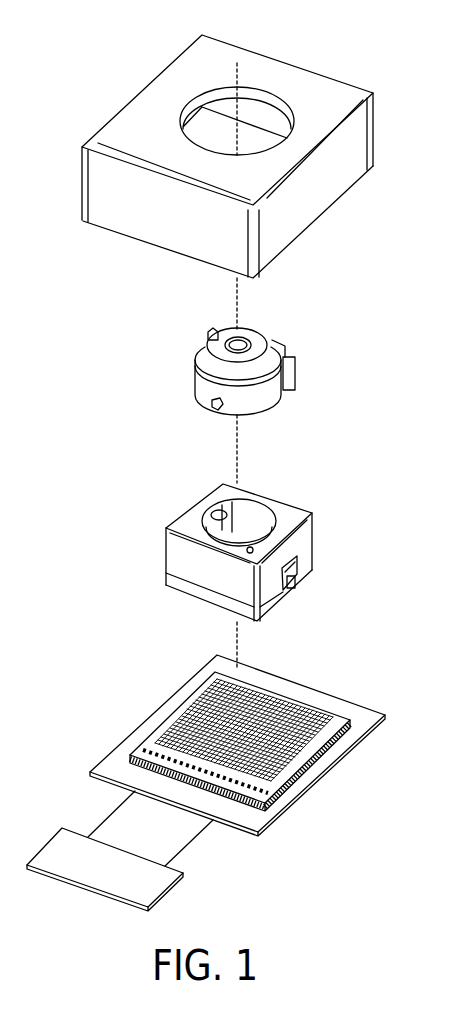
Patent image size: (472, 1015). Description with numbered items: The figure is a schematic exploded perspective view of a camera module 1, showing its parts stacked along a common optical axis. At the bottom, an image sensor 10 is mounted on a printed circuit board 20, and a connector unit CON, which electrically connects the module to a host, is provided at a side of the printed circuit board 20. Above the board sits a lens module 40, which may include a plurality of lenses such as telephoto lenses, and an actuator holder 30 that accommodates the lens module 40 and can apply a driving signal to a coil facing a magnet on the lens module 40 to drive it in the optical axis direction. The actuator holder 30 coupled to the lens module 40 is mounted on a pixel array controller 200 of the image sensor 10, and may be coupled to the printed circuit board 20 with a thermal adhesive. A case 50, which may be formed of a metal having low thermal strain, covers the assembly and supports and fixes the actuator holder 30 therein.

The camera module 1 is at (44, 28).
The case 50 is at (322, 193).
The lens module 40 is at (268, 397).
The actuator holder 30 is at (302, 540).
The printed circuit board 20 is at (361, 707).
The image sensor 10 is at (313, 702).
The pixel array controller 200 is at (310, 737).
The connector unit CON is at (170, 837).